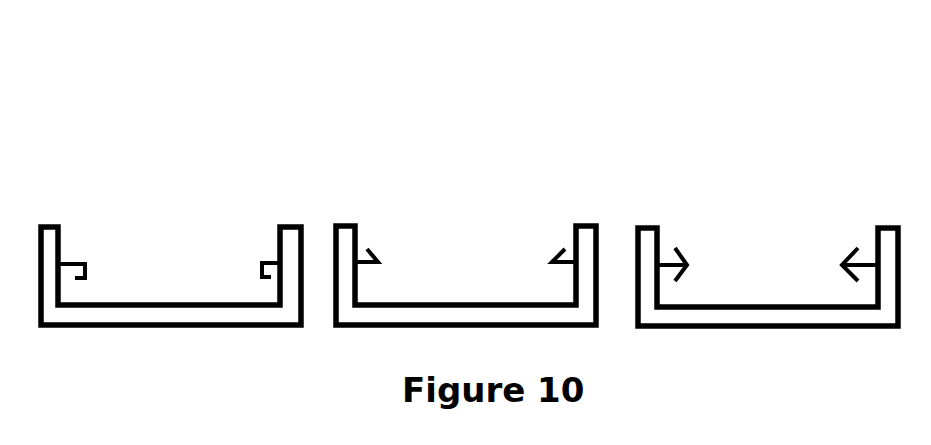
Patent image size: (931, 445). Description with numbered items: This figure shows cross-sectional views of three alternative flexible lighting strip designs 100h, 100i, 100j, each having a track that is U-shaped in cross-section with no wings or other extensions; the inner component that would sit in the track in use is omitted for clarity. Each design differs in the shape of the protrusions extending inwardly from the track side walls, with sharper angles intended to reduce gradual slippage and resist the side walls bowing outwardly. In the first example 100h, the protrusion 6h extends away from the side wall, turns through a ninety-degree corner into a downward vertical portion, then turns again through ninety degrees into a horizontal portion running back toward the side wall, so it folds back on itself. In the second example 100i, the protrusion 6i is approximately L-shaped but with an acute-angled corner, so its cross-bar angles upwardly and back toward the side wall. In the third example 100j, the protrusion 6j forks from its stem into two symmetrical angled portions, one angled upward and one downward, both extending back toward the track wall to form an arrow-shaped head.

The flexible lighting strip 100h is at (85, 105).
The flexible lighting strip 100i is at (399, 122).
The flexible lighting strip 100j is at (684, 112).
The protrusion 6h is at (75, 258).
The protrusion 6i is at (377, 257).
The protrusion 6j is at (665, 260).